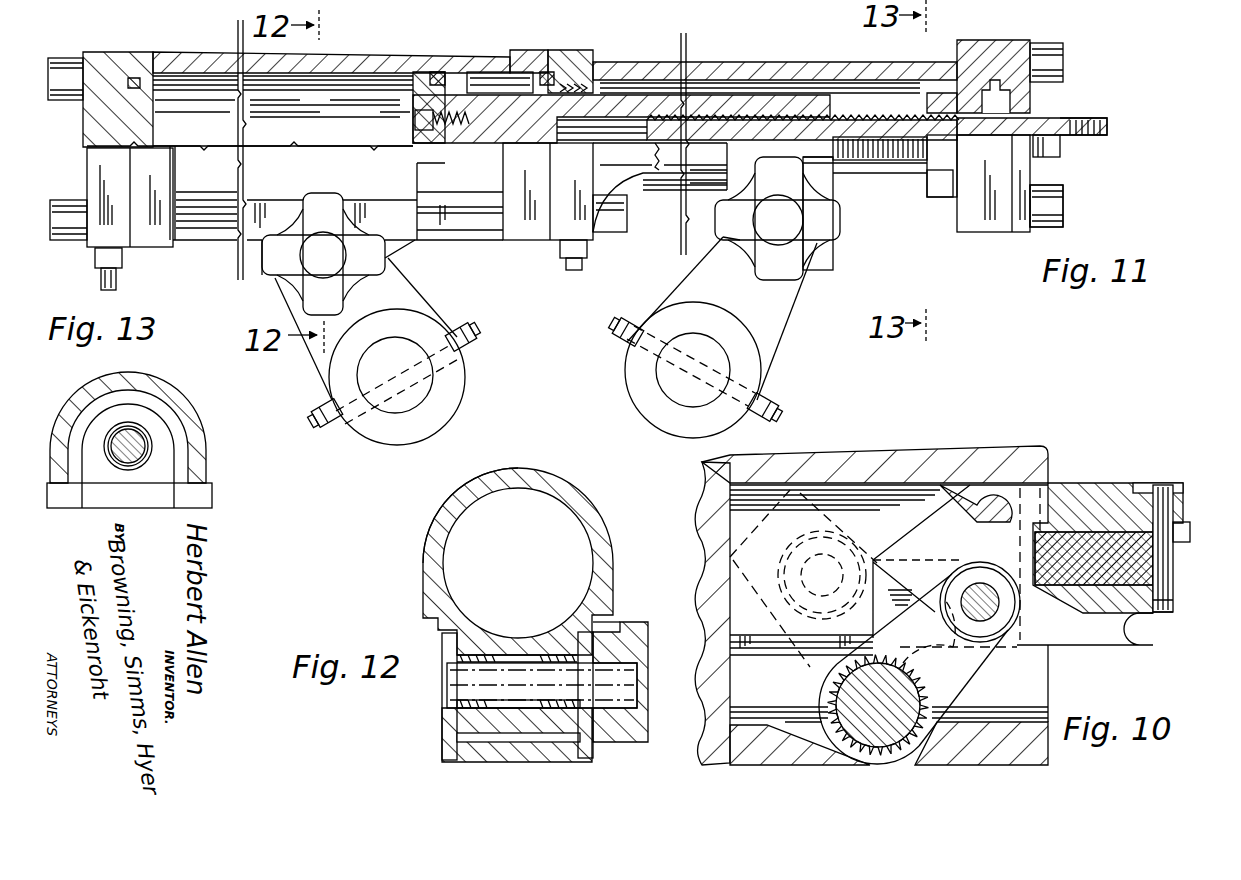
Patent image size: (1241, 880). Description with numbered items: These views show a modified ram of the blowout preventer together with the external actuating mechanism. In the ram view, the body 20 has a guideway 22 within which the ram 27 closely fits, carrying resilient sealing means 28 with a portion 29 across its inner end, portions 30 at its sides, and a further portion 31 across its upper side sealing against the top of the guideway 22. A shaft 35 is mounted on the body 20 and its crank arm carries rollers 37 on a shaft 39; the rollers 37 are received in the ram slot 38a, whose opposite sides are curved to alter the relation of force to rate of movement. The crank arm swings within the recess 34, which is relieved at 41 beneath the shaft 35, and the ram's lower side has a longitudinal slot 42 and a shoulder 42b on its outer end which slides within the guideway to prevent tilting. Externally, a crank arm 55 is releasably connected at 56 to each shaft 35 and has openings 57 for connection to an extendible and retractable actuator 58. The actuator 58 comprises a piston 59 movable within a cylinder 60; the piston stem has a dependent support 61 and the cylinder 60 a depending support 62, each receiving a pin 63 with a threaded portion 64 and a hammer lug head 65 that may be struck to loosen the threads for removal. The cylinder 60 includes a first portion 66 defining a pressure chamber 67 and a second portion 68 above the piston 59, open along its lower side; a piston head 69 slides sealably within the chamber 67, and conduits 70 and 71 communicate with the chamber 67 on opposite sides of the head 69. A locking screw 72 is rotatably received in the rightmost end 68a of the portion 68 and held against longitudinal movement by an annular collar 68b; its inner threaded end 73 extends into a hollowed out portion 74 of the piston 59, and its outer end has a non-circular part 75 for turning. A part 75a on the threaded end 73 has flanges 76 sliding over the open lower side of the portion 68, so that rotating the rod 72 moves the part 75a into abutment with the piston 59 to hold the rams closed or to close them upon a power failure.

In FIG. 10, the body 20 is at (939, 444).
In FIG. 10, the guideway 22 is at (720, 518).
In FIG. 10, the ram 27 is at (1109, 479).
In FIG. 10, the resilient sealing means 28 is at (1170, 600).
In FIG. 10, the sealing portion 29 is at (1177, 558).
In FIG. 10, the side sealing portions 30 is at (1190, 570).
In FIG. 10, the upper sealing portion 31 is at (1020, 447).
In FIG. 10, the recess 34 is at (1010, 718).
In FIG. 11, the shaft 35 is at (449, 400).
In FIG. 10, the shaft 35 is at (843, 701).
In FIG. 10, the rollers 37 is at (990, 556).
In FIG. 10, the ram slot 38a is at (950, 551).
In FIG. 10, the shaft 39 is at (993, 614).
In FIG. 10, the relieved portion 41 is at (823, 712).
In FIG. 10, the longitudinal slot 42 is at (1153, 645).
In FIG. 10, the shoulder 42b is at (830, 669).
In FIG. 11, the crank arm 55 is at (312, 352).
In FIG. 12, the crank arm 55 is at (445, 653).
In FIG. 11, the releasable connection 56 is at (318, 432).
In FIG. 12, the openings 57 is at (450, 703).
In FIG. 11, the actuator 58 is at (466, 52).
In FIG. 12, the actuator 58 is at (435, 515).
In FIG. 11, the piston 59 is at (629, 91).
In FIG. 11, the cylinder 60 is at (365, 52).
In FIG. 13, the cylinder 60 is at (174, 377).
In FIG. 12, the cylinder 60 is at (606, 509).
In FIG. 11, the dependent support 61 is at (835, 252).
In FIG. 11, the depending support 62 is at (275, 277).
In FIG. 12, the depending support 62 is at (577, 760).
In FIG. 11, the pin 63 is at (352, 268).
In FIG. 12, the pin 63 is at (463, 683).
In FIG. 12, the threaded portion 64 is at (640, 683).
In FIG. 11, the hammer lug head 65 is at (390, 258).
In FIG. 12, the hammer lug head 65 is at (624, 622).
In FIG. 11, the first portion of cylinder 66 is at (192, 51).
In FIG. 11, the pressure chamber 67 is at (278, 130).
In FIG. 11, the second portion of cylinder 68 is at (732, 60).
In FIG. 13, the second portion of cylinder 68 is at (206, 434).
In FIG. 11, the rightmost end of second portion 68a is at (1030, 173).
In FIG. 11, the annular collar 68b is at (991, 86).
In FIG. 11, the piston head 69 is at (396, 118).
In FIG. 11, the conduit 70 is at (122, 272).
In FIG. 11, the conduit 71 is at (562, 262).
In FIG. 11, the rod or locking screw 72 is at (887, 164).
In FIG. 13, the rod or locking screw 72 is at (150, 432).
In FIG. 11, the inner threaded end 73 is at (792, 116).
In FIG. 13, the inner threaded end 73 is at (102, 470).
In FIG. 11, the hollowed out portion 74 is at (595, 118).
In FIG. 11, the non-circular part 75 is at (1084, 117).
In FIG. 11, the part 75a is at (927, 97).
In FIG. 13, the part 75a is at (150, 432).
In FIG. 11, the flanges 76 is at (957, 174).
In FIG. 13, the flanges 76 is at (212, 493).